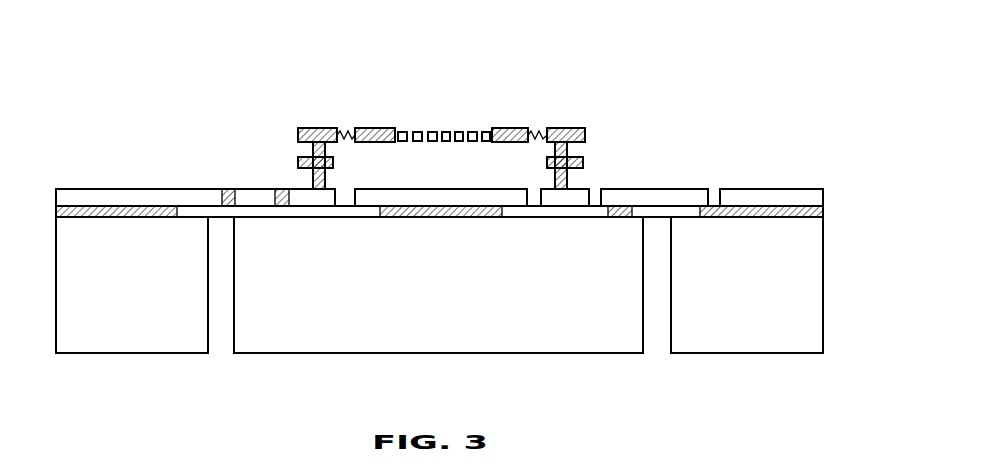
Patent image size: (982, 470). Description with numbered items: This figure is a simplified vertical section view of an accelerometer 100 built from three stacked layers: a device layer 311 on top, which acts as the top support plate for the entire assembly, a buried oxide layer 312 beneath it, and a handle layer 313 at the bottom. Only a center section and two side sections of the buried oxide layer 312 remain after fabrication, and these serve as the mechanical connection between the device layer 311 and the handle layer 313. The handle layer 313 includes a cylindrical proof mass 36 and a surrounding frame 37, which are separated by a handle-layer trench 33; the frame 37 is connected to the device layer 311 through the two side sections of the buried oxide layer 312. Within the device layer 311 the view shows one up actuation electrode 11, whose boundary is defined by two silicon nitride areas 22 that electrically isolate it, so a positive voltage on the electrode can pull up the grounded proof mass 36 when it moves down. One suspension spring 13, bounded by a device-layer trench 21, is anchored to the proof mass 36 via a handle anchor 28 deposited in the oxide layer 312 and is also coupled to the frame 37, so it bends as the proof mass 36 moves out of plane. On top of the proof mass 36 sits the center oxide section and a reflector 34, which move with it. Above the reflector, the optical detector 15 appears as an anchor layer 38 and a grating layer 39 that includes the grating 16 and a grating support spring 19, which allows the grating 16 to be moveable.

The accelerometer 100 is at (715, 84).
The optical detector 15 is at (458, 125).
The grating 16 is at (423, 130).
The grating support spring 19 is at (338, 128).
The grating layer 39 is at (562, 128).
The anchor layer 38 is at (547, 160).
The up actuation electrode 11 is at (252, 188).
The silicon nitride area 22 is at (230, 188).
The reflector 34 is at (420, 188).
The suspension spring 13 is at (677, 197).
The device-layer trench 21 is at (595, 184).
The handle anchor 28 is at (617, 208).
The device layer 311 is at (828, 115).
The buried oxide layer 312 is at (823, 208).
The handle layer 313 is at (828, 217).
The proof mass 36 is at (387, 338).
The frame 37 is at (120, 337).
The handle-layer trench 33 is at (655, 338).